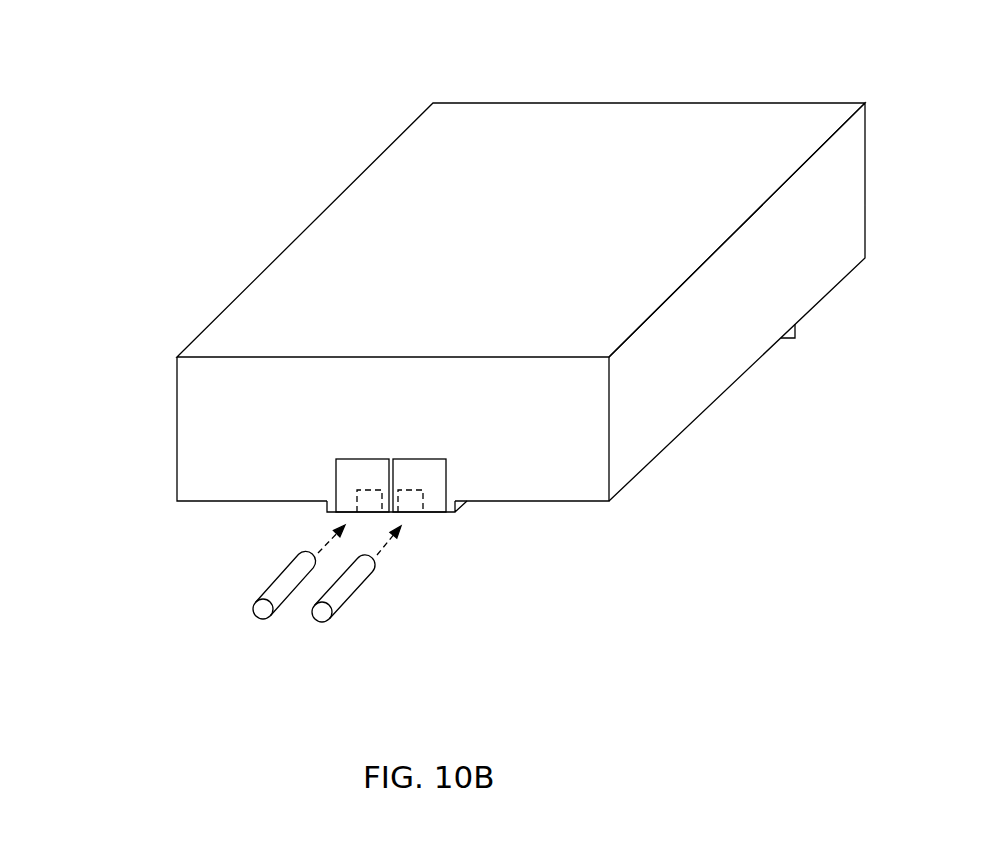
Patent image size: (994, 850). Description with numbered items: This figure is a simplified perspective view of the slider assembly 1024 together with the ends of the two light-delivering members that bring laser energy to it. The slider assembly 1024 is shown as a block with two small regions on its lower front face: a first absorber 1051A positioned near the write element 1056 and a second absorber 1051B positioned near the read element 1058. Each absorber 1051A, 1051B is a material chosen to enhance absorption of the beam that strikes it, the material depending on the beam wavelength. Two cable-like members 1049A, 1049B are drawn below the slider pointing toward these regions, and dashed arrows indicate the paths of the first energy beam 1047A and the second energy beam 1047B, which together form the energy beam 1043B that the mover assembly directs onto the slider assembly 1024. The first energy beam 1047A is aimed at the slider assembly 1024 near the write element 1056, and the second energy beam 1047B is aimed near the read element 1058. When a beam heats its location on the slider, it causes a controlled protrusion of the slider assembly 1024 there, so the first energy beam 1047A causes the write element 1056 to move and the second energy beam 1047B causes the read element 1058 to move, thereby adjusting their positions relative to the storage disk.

The slider assembly 1024 is at (612, 88).
The energy beam 1043B is at (389, 548).
The first absorber 1051A is at (428, 468).
The second absorber 1051B is at (348, 470).
The write element 1056 is at (417, 497).
The read element 1058 is at (367, 497).
The first energy beam 1047A is at (377, 558).
The second energy beam 1047B is at (327, 538).
The pin 1049A is at (322, 612).
The pin 1049B is at (263, 609).